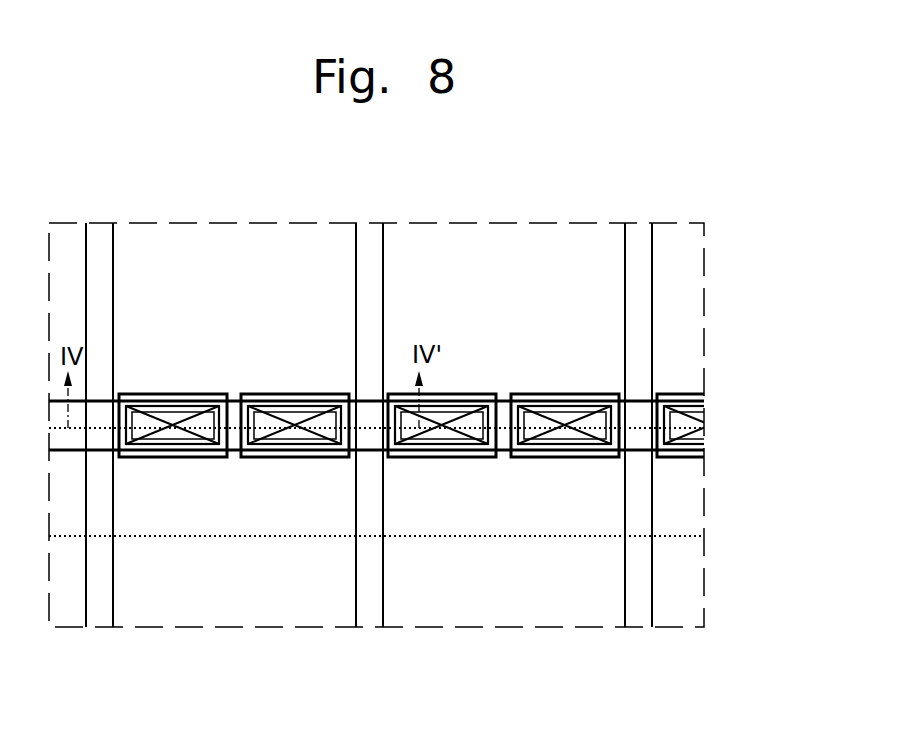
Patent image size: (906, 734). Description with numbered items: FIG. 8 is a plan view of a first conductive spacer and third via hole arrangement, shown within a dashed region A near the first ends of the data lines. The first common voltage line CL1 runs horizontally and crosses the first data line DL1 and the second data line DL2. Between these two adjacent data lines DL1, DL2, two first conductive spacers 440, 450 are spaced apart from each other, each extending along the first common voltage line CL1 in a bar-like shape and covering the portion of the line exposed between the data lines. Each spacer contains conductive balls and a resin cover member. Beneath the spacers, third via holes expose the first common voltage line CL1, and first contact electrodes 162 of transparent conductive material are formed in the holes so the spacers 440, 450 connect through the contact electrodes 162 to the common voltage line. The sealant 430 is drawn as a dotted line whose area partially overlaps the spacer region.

The first contact electrode 162 is at (173, 393).
The first conductive spacer 450 is at (288, 417).
The first conductive spacer 440 is at (160, 437).
The first common voltage line CL1 is at (636, 400).
The sealant 430 is at (672, 534).
The first data line DL1 is at (102, 628).
The second data line DL2 is at (370, 628).
The region A is at (580, 222).